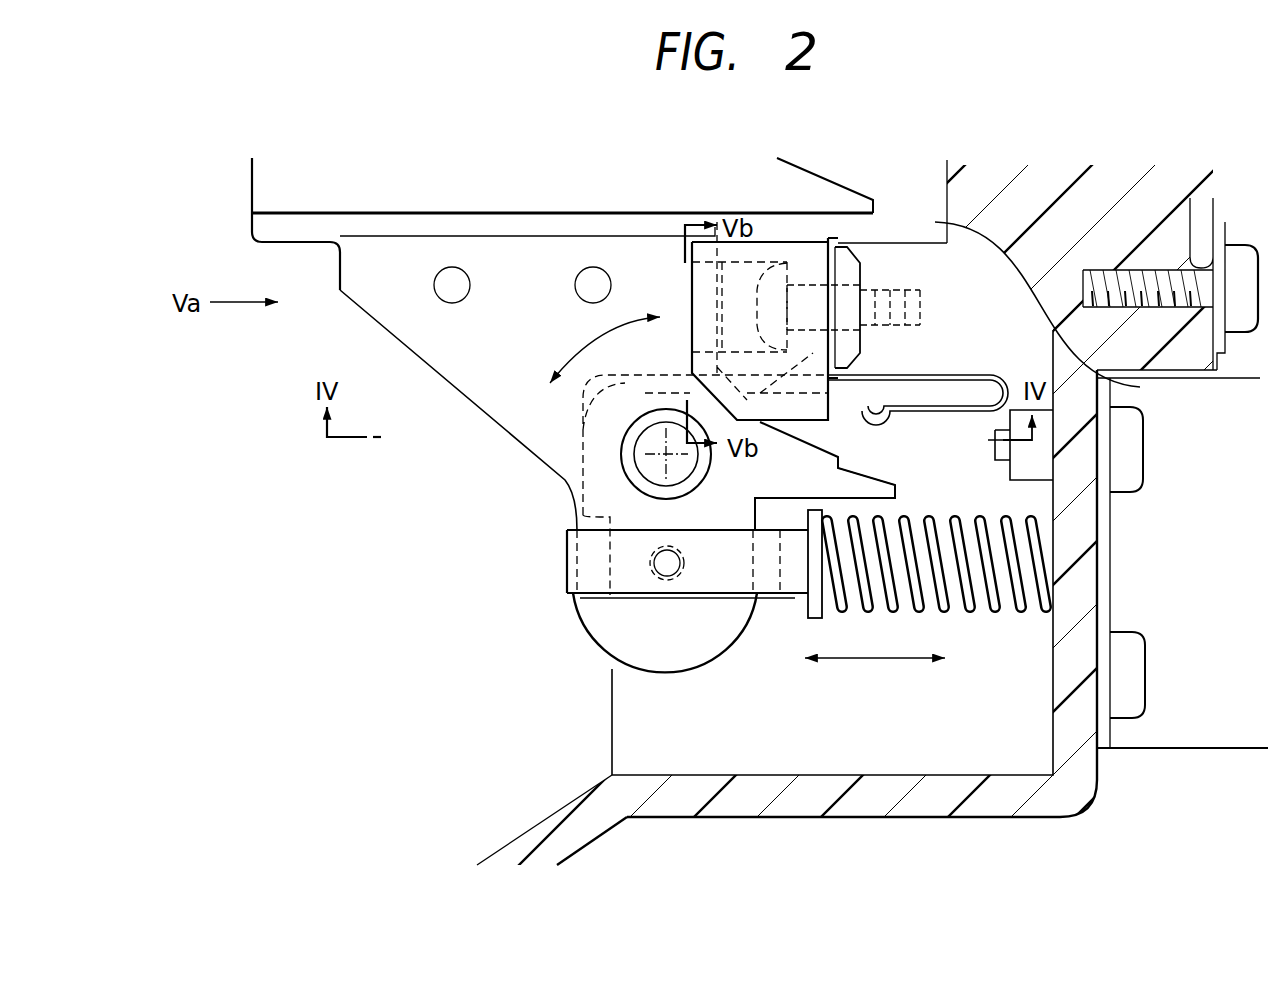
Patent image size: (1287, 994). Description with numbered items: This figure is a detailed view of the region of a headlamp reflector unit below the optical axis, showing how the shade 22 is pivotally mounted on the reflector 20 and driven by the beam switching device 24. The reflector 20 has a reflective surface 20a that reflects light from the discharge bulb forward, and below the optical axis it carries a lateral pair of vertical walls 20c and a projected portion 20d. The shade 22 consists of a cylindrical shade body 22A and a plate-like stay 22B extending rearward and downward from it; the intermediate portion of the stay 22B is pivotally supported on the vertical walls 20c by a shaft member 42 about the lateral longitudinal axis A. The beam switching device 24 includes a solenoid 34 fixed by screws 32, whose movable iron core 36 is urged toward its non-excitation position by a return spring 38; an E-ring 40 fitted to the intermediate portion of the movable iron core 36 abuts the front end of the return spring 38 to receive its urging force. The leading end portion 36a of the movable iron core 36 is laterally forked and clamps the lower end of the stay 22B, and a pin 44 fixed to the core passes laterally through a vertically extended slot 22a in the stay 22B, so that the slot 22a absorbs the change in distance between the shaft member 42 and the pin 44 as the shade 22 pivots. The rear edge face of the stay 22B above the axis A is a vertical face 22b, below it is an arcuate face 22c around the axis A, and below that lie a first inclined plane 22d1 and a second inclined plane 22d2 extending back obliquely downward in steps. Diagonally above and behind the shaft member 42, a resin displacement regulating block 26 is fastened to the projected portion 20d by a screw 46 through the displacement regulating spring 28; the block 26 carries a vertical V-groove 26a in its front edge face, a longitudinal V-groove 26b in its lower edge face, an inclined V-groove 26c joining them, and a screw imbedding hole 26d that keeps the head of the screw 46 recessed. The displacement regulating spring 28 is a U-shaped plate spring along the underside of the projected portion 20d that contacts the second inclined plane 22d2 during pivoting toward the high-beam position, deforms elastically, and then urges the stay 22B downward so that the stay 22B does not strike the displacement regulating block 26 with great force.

The reflector 20 is at (833, 822).
The reflective surface 20a is at (528, 832).
The vertical walls 20c is at (653, 723).
The projected portion 20d is at (888, 248).
The shade 22 is at (350, 322).
The shade body 22A is at (270, 188).
The stay 22B is at (503, 405).
The slot 22a is at (678, 578).
The vertical face 22b is at (780, 300).
The arcuate face 22c is at (790, 372).
The first inclined plane 22d1 is at (823, 441).
The second inclined plane 22d2 is at (870, 475).
The beam switching device 24 is at (1153, 753).
The displacement regulating block 26 is at (688, 302).
The V-groove 26a is at (420, 357).
The V-groove 26b is at (825, 476).
The V-groove 26c is at (705, 485).
The screw imbedding hole 26d is at (757, 262).
The displacement regulating spring 28 is at (960, 418).
The screws 32 is at (1135, 650).
The solenoid 34 is at (1200, 727).
The movable iron core 36 is at (793, 597).
The leading end portion 36a is at (585, 565).
The return spring 38 is at (975, 615).
The E-ring 40 is at (810, 612).
The shaft member 42 is at (645, 443).
The pin 44 is at (660, 575).
The screw 46 is at (917, 308).
The longitudinal axis A is at (640, 475).